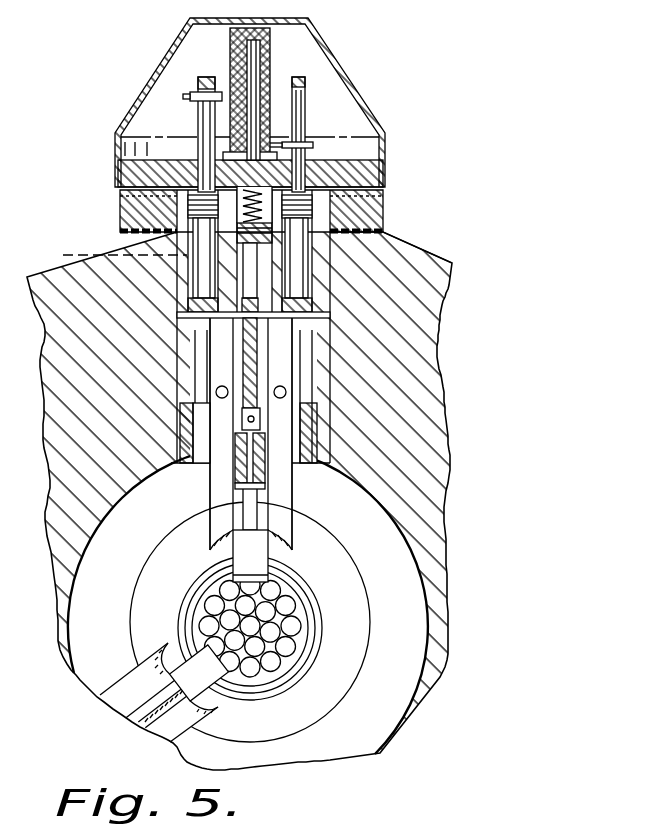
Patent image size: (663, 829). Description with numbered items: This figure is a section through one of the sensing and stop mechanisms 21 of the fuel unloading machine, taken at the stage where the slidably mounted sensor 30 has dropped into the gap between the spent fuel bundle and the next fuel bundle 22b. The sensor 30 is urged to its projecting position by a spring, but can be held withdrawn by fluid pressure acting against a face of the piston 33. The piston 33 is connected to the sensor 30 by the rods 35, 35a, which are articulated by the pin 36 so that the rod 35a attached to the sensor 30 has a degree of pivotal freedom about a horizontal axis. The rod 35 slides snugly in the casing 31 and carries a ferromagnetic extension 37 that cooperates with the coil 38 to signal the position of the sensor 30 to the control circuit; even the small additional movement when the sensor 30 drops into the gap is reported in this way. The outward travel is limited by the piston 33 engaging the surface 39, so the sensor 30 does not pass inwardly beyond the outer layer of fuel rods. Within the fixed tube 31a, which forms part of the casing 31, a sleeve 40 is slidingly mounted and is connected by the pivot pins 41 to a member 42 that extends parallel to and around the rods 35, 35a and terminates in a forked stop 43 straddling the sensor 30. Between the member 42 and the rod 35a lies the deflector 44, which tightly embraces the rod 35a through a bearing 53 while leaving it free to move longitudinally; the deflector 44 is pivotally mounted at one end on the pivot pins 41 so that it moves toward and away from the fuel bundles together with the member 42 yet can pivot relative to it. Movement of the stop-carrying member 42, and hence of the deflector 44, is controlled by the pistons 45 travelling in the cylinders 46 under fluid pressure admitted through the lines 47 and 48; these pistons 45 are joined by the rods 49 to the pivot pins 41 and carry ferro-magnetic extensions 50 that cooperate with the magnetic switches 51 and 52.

The sensing and stop mechanism 21 is at (373, 50).
The next fuel bundle 22b is at (270, 635).
The sensor 30 is at (243, 561).
The casing 31 is at (388, 187).
The fixed tube 31a is at (442, 386).
The piston 33 is at (360, 258).
The rod 35 is at (263, 325).
The rod 35a is at (293, 540).
The pin 36 is at (263, 408).
The ferromagnetic extension 37 is at (263, 85).
The coil 38 is at (268, 45).
The surface 39 is at (188, 282).
The sleeve 40 is at (150, 387).
The pivot pins 41 is at (200, 318).
The member 42 is at (180, 397).
The forked stop 43 is at (217, 508).
The deflector 44 is at (258, 238).
The pistons 45 is at (120, 195).
The cylinders 46 is at (187, 223).
The line 47 is at (66, 255).
The line 48 is at (120, 190).
The rods 49 is at (187, 285).
The ferro-magnetic extensions 50 is at (203, 103).
The magnetic switch 51 is at (195, 95).
The magnetic switch 52 is at (313, 143).
The bearing 53 is at (240, 470).